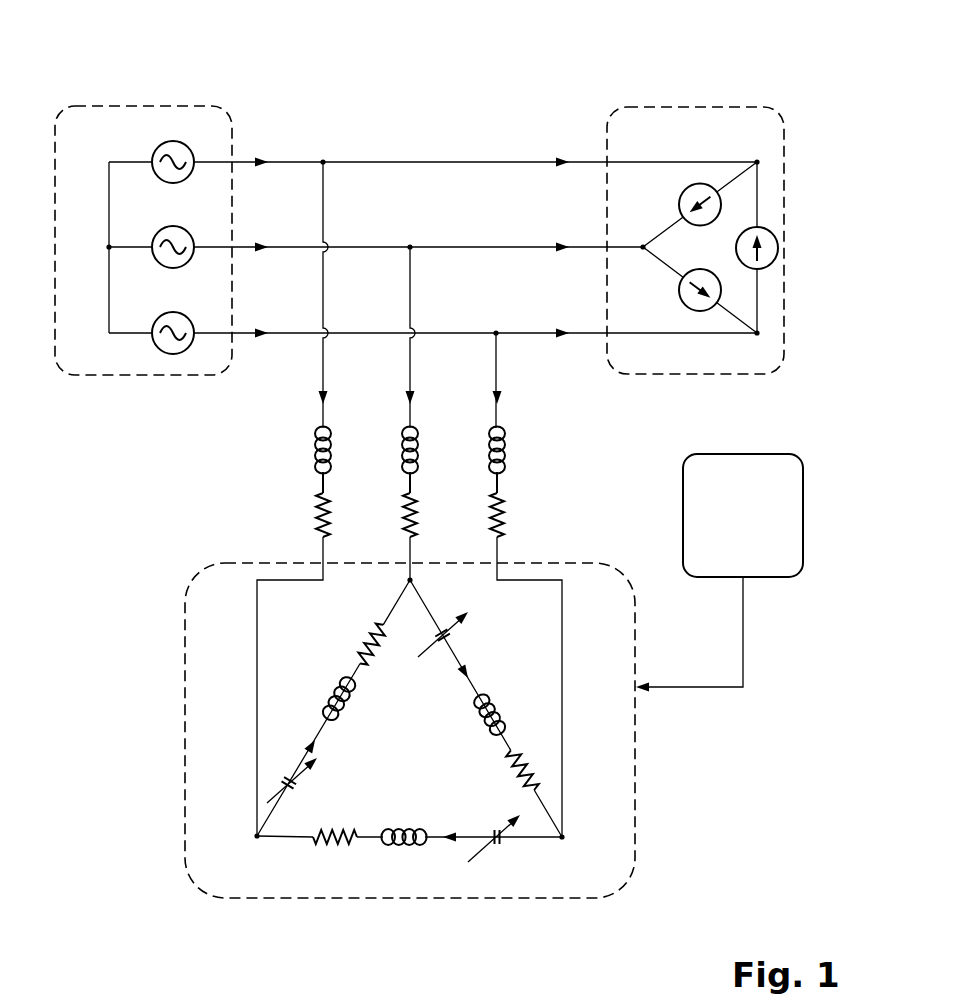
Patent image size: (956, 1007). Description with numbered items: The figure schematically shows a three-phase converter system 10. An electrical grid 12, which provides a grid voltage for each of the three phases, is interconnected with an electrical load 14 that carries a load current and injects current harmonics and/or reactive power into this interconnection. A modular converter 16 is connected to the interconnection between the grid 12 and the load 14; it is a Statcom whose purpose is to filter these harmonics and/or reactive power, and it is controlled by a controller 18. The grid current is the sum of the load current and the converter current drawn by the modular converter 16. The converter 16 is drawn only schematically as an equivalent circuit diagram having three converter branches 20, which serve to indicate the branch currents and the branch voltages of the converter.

The three-phase converter system 10 is at (781, 82).
The electrical grid 12 is at (140, 376).
The electrical load 14 is at (646, 376).
The modular converter 16 is at (185, 700).
The controller 18 is at (683, 505).
The converter branches 20 is at (288, 644).